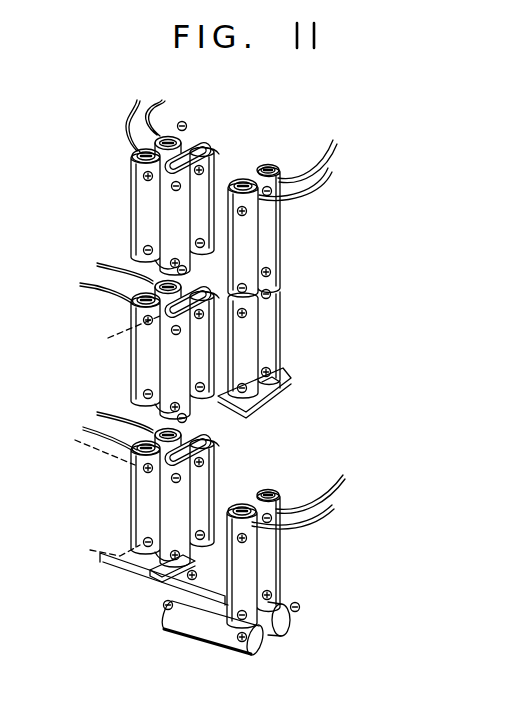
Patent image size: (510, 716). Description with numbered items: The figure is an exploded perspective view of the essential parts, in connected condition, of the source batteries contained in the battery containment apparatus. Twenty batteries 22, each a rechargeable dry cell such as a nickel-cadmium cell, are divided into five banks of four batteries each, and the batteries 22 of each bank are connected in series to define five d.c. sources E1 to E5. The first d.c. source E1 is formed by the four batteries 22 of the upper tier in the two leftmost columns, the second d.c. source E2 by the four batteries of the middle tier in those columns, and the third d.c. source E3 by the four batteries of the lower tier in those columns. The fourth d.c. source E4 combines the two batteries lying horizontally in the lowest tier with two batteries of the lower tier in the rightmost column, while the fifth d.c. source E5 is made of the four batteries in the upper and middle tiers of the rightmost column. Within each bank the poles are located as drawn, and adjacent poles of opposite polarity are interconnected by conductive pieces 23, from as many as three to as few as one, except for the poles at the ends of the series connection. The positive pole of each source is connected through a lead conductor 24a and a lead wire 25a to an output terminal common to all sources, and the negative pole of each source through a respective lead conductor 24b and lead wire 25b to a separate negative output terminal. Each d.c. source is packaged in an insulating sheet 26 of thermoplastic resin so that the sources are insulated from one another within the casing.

The battery 22 is at (143, 216).
The conductive piece 23 is at (214, 150).
The lead conductor 24a is at (133, 160).
The lead conductor 24b is at (180, 139).
The lead wire 25a is at (128, 122).
The lead wire 25b is at (158, 112).
The insulating sheet 26 is at (288, 416).
The first d.c. source E1 is at (125, 187).
The second d.c. source E2 is at (125, 375).
The third d.c. source E3 is at (125, 500).
The fourth d.c. source E4 is at (287, 578).
The fifth d.c. source E5 is at (285, 277).